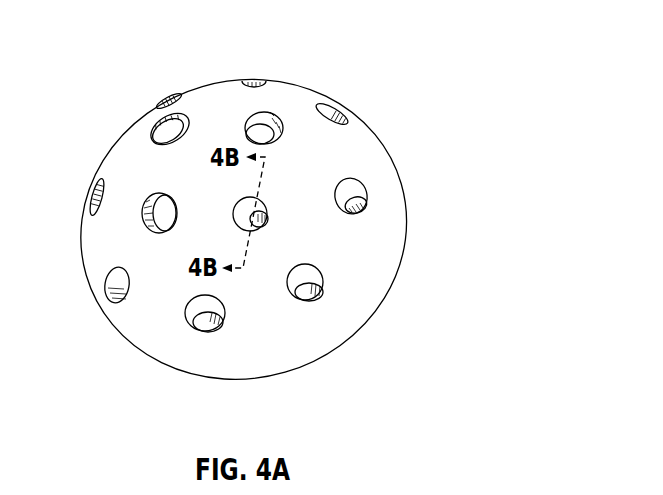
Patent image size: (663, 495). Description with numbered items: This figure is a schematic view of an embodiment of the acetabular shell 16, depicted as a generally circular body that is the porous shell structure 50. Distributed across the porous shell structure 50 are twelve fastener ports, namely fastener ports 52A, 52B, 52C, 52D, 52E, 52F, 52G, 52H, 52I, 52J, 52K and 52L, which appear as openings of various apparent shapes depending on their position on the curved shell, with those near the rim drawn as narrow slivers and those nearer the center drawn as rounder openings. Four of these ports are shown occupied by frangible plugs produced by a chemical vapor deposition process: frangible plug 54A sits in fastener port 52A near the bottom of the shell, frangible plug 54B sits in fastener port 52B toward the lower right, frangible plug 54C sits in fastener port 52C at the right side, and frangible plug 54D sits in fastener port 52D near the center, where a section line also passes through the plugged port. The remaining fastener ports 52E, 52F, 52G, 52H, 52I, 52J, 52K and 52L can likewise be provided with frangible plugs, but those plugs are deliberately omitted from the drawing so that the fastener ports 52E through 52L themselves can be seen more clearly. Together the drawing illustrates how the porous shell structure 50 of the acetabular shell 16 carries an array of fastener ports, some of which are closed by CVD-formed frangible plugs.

The acetabular shell 16 is at (438, 90).
The porous shell structure 50 is at (300, 86).
The fastener port 52A is at (207, 332).
The fastener port 52B is at (313, 302).
The fastener port 52C is at (368, 200).
The fastener port 52D is at (260, 213).
The fastener port 52E is at (252, 79).
The fastener port 52F is at (177, 100).
The fastener port 52G is at (93, 194).
The fastener port 52H is at (113, 279).
The fastener port 52I is at (343, 108).
The fastener port 52J is at (262, 138).
The fastener port 52K is at (155, 140).
The fastener port 52L is at (142, 207).
The frangible plug 54A is at (213, 332).
The frangible plug 54B is at (323, 283).
The frangible plug 54C is at (353, 188).
The frangible plug 54D is at (247, 210).